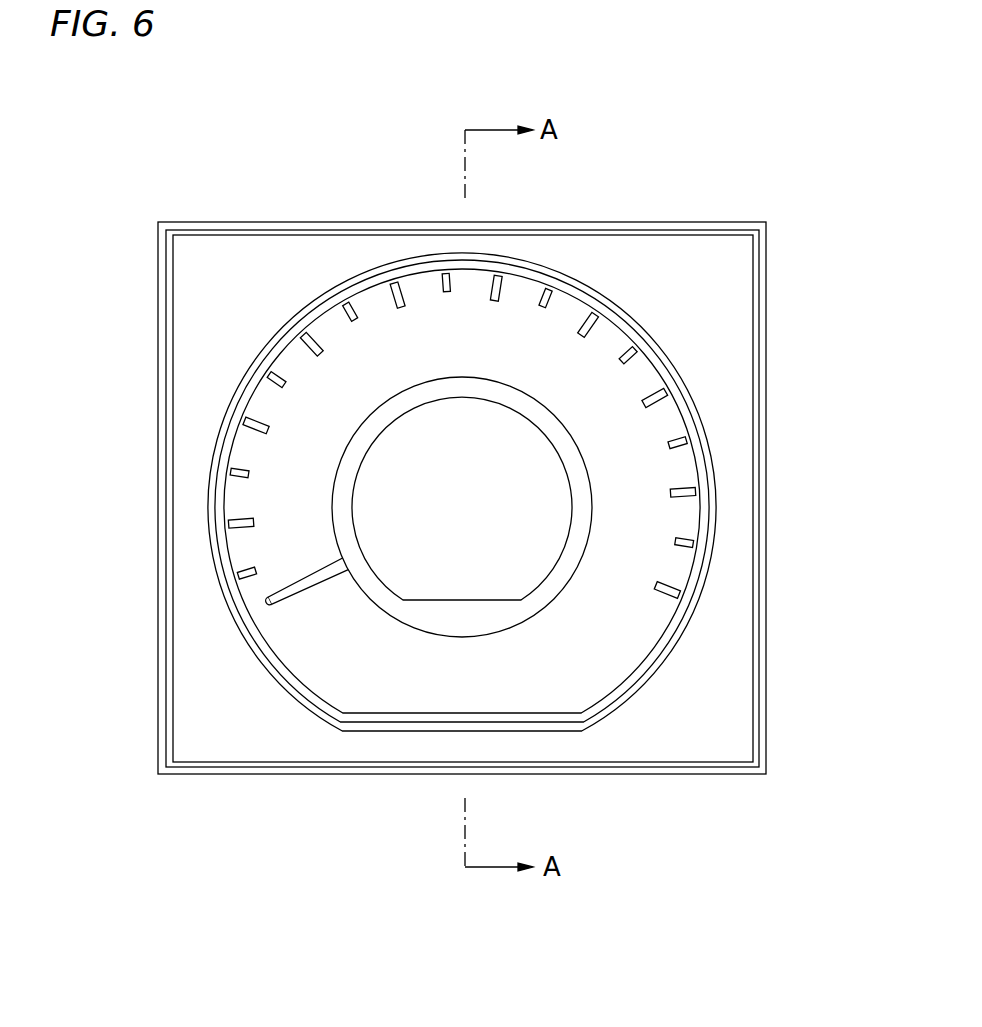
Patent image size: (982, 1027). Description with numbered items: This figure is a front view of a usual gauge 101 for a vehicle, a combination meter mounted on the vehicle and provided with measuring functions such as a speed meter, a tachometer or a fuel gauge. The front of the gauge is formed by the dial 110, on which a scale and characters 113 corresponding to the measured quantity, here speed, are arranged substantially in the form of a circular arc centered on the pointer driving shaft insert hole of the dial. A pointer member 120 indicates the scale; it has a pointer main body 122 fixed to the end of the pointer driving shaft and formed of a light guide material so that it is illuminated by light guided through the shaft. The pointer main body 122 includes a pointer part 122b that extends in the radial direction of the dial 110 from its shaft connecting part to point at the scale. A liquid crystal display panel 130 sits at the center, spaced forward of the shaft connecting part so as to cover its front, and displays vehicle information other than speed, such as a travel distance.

The gauge for a vehicle 101 is at (667, 215).
The dial 110 is at (363, 360).
The scale and characters 113 is at (417, 307).
The pointer member 120 is at (330, 587).
The pointer main body 122 is at (273, 555).
The pointer part 122b is at (267, 601).
The liquid crystal display panel 130 is at (515, 495).